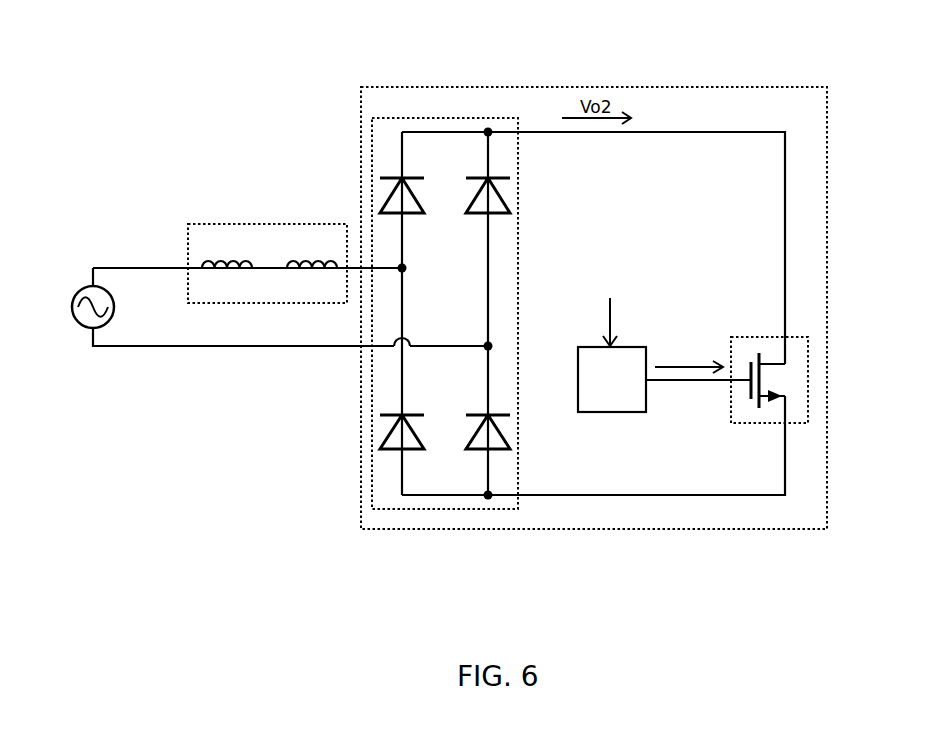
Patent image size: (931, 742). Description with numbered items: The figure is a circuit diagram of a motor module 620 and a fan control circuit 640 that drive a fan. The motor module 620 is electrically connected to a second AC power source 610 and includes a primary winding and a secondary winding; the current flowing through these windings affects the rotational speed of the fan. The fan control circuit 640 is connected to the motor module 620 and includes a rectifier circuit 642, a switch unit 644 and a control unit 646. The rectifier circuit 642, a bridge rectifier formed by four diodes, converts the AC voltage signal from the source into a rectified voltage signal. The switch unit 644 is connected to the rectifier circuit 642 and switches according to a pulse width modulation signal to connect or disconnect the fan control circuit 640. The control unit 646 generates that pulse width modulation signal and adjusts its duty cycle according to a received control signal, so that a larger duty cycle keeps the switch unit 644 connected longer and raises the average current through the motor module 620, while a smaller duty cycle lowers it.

The second AC power source 610 is at (80, 288).
The motor module 620 is at (207, 223).
The fan control circuit 640 is at (525, 87).
The rectifier circuit 642 is at (518, 158).
The switch unit 644 is at (765, 337).
The control unit 646 is at (650, 333).